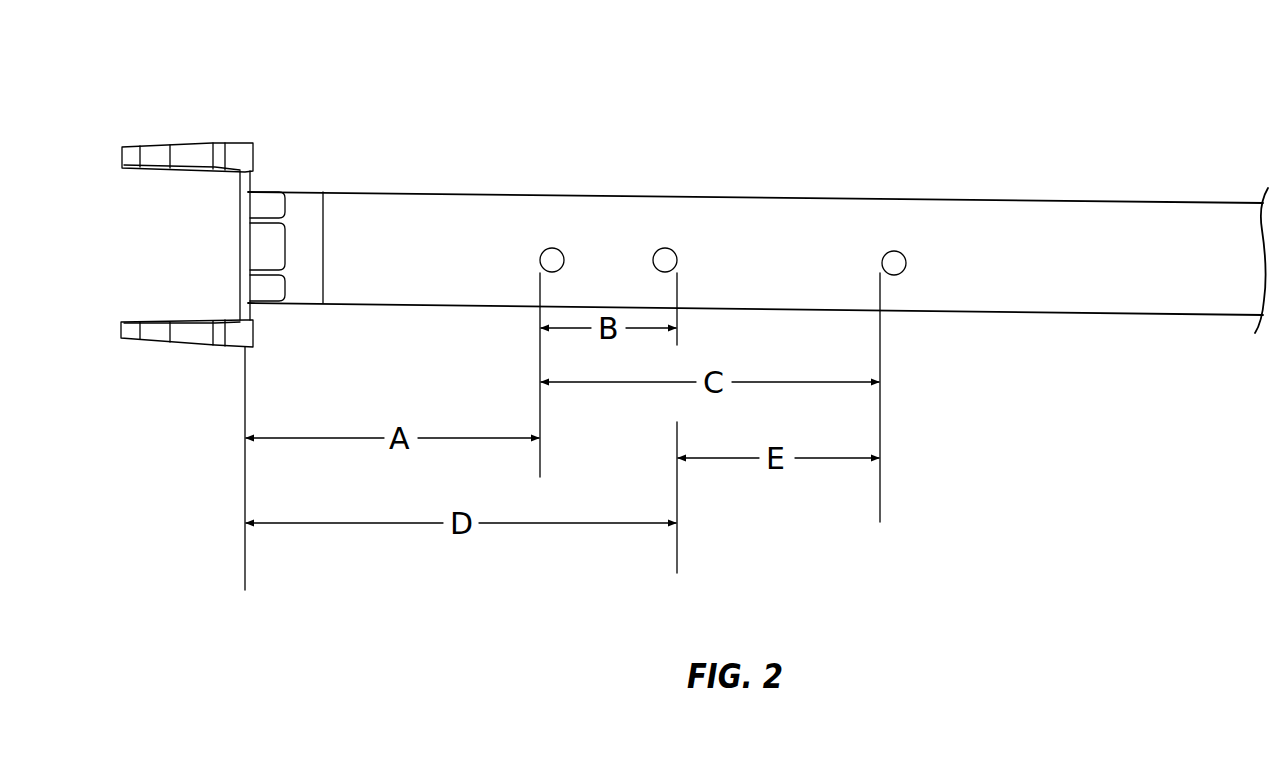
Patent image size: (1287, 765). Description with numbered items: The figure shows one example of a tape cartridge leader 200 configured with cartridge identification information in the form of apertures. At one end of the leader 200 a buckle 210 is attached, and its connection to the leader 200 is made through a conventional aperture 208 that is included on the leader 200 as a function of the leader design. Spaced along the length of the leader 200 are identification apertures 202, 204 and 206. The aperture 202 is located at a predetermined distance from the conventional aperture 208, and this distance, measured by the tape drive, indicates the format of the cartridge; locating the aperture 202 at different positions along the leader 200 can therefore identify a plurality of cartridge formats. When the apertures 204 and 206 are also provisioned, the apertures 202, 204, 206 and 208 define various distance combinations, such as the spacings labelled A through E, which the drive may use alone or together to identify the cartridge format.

The tape cartridge leader 200 is at (513, 85).
The aperture 202 is at (557, 248).
The aperture 204 is at (672, 248).
The aperture 206 is at (903, 251).
The aperture 208 is at (270, 243).
The buckle 210 is at (192, 128).